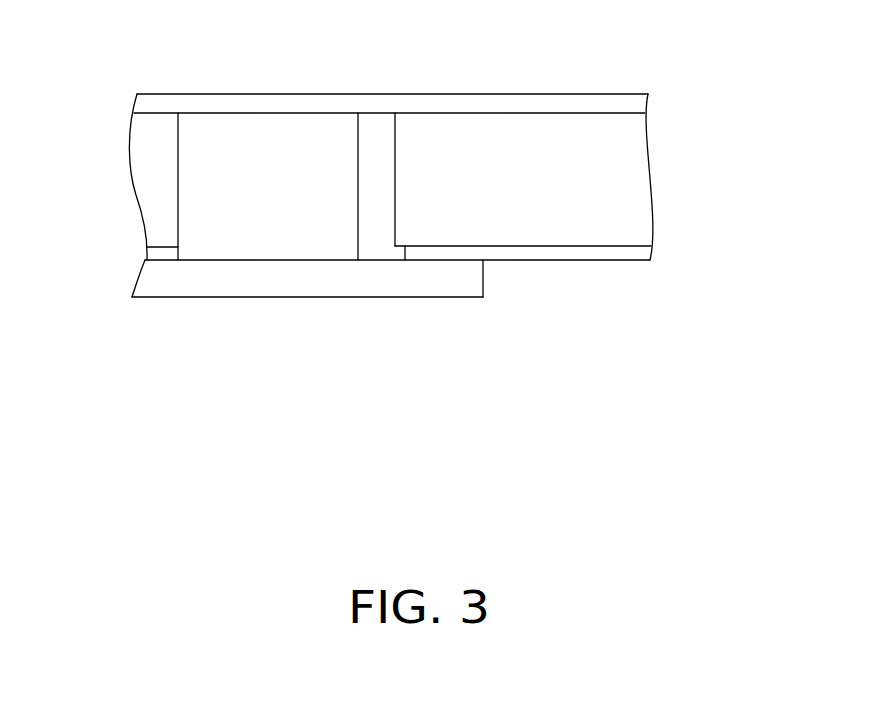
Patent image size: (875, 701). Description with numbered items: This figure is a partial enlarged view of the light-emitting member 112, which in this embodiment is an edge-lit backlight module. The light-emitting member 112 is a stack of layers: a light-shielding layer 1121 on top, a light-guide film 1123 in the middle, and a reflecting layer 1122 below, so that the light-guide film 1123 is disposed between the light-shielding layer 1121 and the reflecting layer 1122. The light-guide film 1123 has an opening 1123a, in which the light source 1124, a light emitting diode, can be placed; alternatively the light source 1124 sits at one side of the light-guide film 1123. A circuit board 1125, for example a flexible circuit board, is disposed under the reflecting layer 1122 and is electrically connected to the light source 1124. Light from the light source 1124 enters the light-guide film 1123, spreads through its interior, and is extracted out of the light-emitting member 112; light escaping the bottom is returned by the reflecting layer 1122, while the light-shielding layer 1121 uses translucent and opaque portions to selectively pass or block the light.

The light-emitting member 112 is at (848, 337).
The light-shielding layer 1121 is at (602, 105).
The reflecting layer 1122 is at (635, 253).
The light-guide film 1123 is at (625, 175).
The opening 1123a is at (382, 140).
The light source 1124 is at (282, 237).
The circuit board 1125 is at (385, 283).